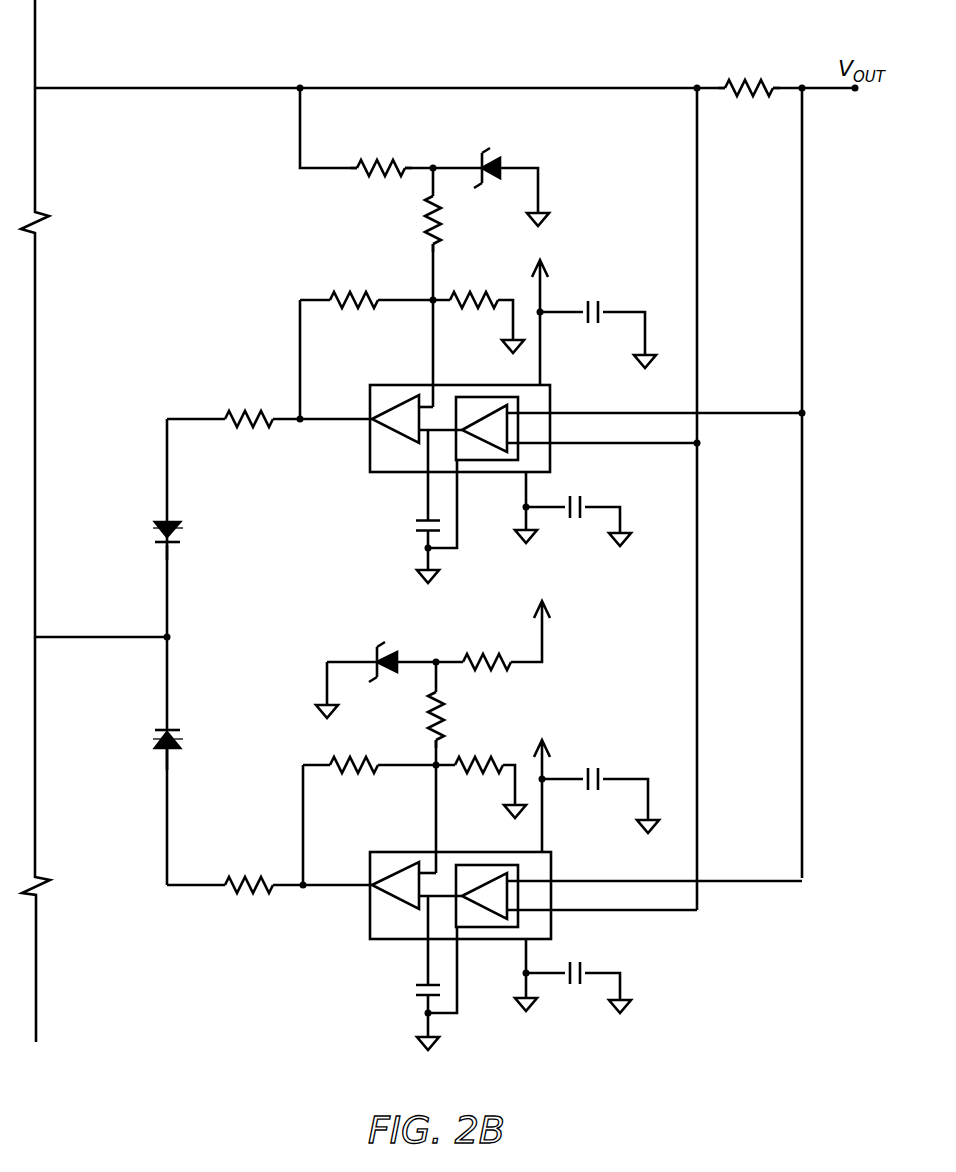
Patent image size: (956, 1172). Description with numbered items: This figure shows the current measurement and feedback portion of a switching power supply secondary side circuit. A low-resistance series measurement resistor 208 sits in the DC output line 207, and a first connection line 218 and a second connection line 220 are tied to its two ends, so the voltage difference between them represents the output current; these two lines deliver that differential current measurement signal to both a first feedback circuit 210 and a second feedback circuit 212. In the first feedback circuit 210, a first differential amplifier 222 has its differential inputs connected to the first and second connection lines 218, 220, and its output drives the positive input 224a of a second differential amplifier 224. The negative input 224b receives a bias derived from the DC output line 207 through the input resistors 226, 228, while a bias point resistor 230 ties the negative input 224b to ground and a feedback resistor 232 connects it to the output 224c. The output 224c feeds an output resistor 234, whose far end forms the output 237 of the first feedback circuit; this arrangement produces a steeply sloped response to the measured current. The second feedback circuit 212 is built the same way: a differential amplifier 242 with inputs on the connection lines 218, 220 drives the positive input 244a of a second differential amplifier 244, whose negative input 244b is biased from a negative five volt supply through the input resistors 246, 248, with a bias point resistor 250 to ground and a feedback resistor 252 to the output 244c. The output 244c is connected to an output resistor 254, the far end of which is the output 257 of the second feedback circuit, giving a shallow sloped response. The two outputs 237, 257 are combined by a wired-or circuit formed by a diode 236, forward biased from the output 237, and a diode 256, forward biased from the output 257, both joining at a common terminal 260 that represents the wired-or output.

The DC output line 207 is at (340, 87).
The series measurement resistor 208 is at (752, 88).
The first feedback circuit 210 is at (245, 348).
The second feedback circuit 212 is at (325, 950).
The first connection line 218 is at (697, 188).
The second connection line 220 is at (802, 190).
The first differential amplifier 222 is at (517, 421).
The second differential amplifier 224 is at (412, 396).
The positive input 224a is at (436, 432).
The negative input 224b is at (433, 406).
The output 224c is at (370, 417).
The input resistor 226 is at (381, 157).
The input resistor 228 is at (423, 226).
The bias point resistor 230 is at (467, 290).
The feedback resistor 232 is at (337, 288).
The output resistor 234 is at (218, 412).
The diode 236 is at (183, 531).
The output 237 is at (170, 593).
The differential amplifier 242 is at (517, 889).
The second differential amplifier 244 is at (411, 863).
The positive input 244a is at (436, 898).
The negative input 244b is at (437, 872).
The output 244c is at (370, 884).
The input resistor 246 is at (500, 660).
The input resistor 248 is at (448, 726).
The bias point resistor 250 is at (482, 765).
The feedback resistor 252 is at (345, 764).
The output resistor 254 is at (245, 880).
The diode 256 is at (183, 740).
The output 257 is at (167, 700).
The common terminal 260 is at (78, 637).